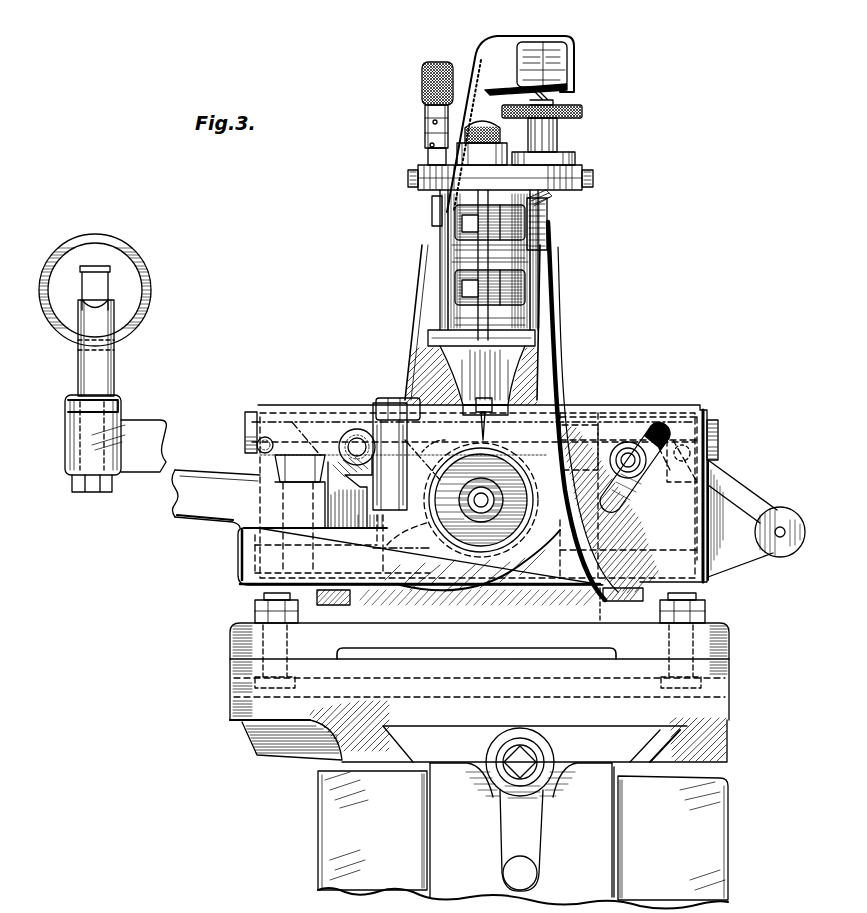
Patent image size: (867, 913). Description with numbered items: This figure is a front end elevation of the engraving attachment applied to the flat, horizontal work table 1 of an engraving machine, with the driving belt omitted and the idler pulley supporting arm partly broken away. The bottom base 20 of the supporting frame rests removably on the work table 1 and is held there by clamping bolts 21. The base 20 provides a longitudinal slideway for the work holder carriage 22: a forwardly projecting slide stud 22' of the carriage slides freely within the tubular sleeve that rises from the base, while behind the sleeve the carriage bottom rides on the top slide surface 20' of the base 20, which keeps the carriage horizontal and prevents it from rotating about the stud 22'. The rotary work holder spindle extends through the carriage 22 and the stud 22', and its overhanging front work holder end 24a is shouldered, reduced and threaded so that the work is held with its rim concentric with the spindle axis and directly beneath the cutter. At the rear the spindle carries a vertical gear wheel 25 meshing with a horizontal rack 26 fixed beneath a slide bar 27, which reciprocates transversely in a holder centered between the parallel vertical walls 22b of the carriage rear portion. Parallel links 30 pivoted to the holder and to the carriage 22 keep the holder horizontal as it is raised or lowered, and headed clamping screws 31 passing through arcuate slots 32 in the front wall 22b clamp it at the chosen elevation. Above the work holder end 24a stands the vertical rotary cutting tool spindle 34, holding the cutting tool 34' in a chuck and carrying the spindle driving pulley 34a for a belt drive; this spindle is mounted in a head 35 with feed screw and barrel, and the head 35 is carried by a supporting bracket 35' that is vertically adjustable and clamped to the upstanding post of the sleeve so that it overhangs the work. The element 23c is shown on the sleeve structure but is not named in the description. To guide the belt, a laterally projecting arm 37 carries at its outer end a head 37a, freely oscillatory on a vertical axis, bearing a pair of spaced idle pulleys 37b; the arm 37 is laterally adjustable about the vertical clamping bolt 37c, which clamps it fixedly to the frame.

The work table 1 is at (234, 704).
The base 20 is at (459, 671).
The top slide surface 20' is at (633, 624).
The clamping bolts 21 is at (262, 598).
The work holder carriage 22 is at (472, 495).
The slide stud 22' is at (457, 584).
The vertical walls 22b is at (677, 410).
The support 23c is at (530, 372).
The work holder end 24a is at (481, 497).
The gear wheel 25 is at (565, 415).
The rack 26 is at (610, 437).
The slide bar 27 is at (711, 418).
The parallel links 30 is at (280, 462).
The clamping screws 31 is at (352, 430).
The arcuate slots 32 is at (362, 428).
The rotary cutting tool spindle 34 is at (520, 362).
The rotary cutting tool 34' is at (531, 396).
The spindle driving pulley 34a is at (522, 330).
The head 35 is at (523, 260).
The supporting bracket 35' is at (506, 115).
The laterally projecting arm 37 is at (203, 480).
The head 37a is at (112, 328).
The idle pulleys 37b is at (128, 278).
The clamping bolt 37c is at (297, 468).